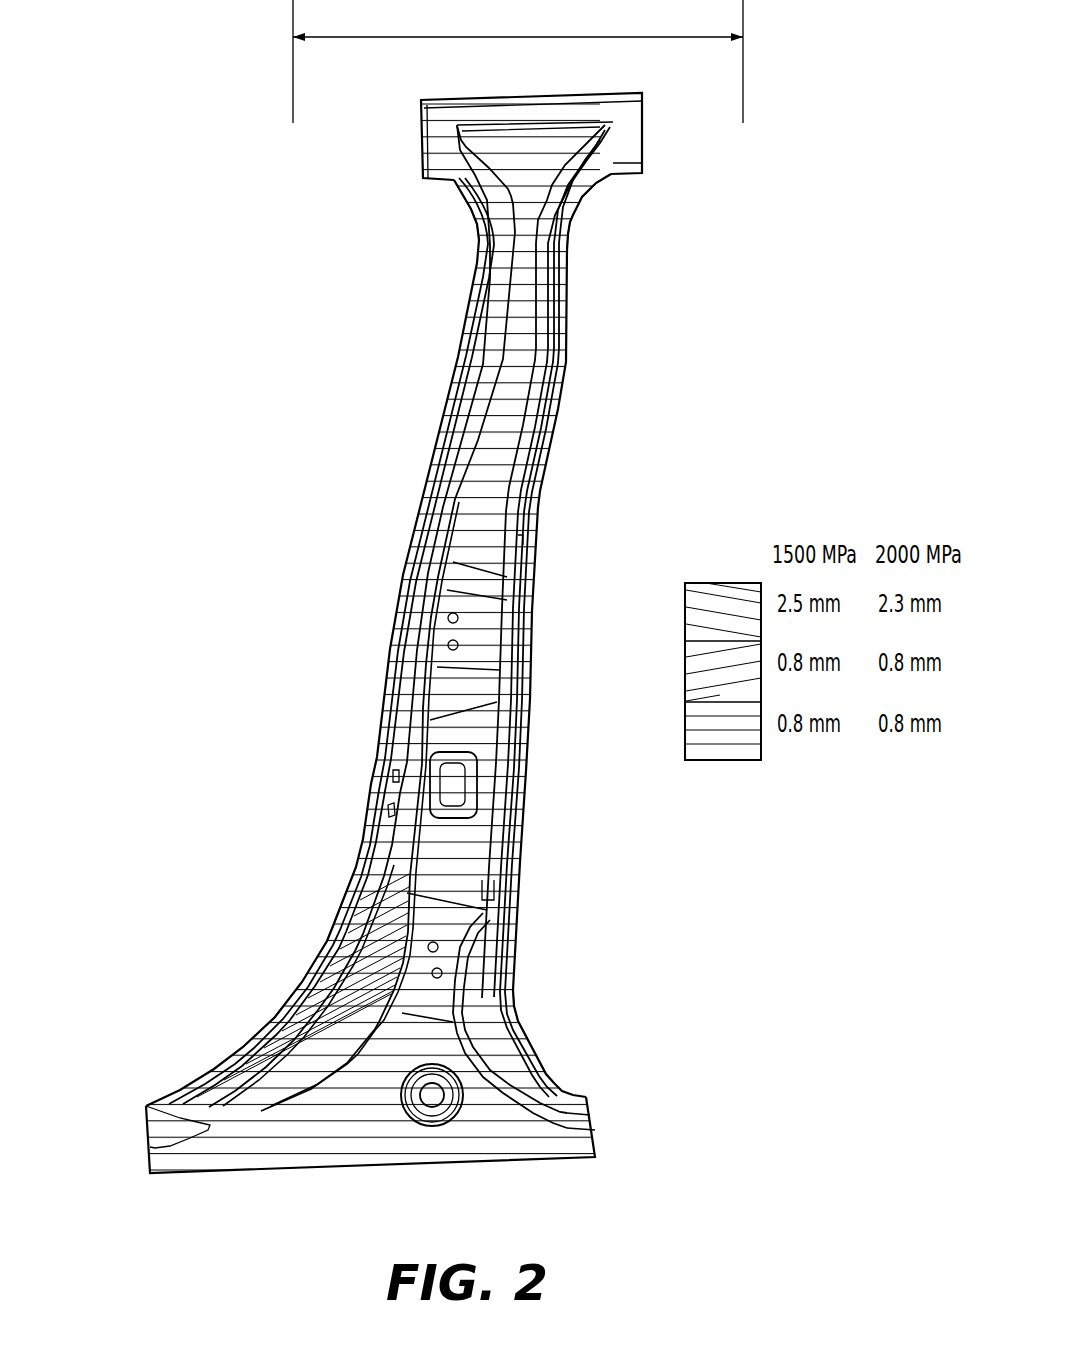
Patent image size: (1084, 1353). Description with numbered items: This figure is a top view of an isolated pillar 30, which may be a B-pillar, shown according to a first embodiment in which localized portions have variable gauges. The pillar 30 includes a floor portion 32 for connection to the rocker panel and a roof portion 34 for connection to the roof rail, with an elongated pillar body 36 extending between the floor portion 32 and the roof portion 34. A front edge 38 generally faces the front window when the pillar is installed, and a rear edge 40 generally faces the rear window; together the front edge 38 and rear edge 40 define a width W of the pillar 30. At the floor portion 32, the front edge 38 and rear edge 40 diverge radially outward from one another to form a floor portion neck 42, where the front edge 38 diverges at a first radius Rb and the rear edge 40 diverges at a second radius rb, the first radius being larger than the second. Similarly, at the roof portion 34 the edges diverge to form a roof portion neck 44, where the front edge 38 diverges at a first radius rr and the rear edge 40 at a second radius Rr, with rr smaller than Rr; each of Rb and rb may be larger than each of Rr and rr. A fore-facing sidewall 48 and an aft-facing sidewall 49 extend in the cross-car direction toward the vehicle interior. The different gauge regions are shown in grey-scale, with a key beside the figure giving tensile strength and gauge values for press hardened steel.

The pillar 30 is at (128, 550).
The floor portion 32 is at (557, 1147).
The roof portion 34 is at (620, 123).
The elongated pillar body 36 is at (488, 562).
The front edge 38 is at (407, 565).
The rear edge 40 is at (542, 593).
The floor portion neck 42 is at (423, 982).
The roof portion neck 44 is at (525, 227).
The fore-facing sidewall 48 is at (407, 678).
The aft-facing sidewall 49 is at (512, 722).
The width W is at (518, 61).
The first radius of roof portion neck rr is at (475, 210).
The second radius of roof portion neck Rr is at (590, 213).
The first radius of floor portion neck Rb is at (293, 995).
The second radius of floor portion neck rb is at (512, 1015).